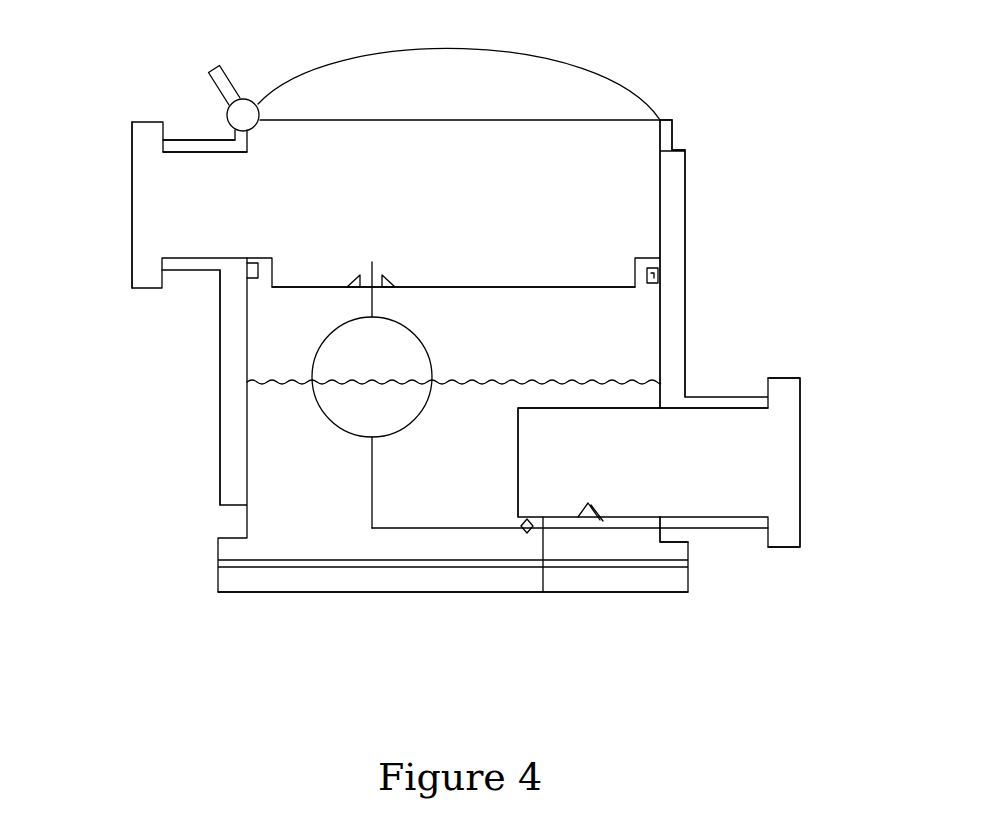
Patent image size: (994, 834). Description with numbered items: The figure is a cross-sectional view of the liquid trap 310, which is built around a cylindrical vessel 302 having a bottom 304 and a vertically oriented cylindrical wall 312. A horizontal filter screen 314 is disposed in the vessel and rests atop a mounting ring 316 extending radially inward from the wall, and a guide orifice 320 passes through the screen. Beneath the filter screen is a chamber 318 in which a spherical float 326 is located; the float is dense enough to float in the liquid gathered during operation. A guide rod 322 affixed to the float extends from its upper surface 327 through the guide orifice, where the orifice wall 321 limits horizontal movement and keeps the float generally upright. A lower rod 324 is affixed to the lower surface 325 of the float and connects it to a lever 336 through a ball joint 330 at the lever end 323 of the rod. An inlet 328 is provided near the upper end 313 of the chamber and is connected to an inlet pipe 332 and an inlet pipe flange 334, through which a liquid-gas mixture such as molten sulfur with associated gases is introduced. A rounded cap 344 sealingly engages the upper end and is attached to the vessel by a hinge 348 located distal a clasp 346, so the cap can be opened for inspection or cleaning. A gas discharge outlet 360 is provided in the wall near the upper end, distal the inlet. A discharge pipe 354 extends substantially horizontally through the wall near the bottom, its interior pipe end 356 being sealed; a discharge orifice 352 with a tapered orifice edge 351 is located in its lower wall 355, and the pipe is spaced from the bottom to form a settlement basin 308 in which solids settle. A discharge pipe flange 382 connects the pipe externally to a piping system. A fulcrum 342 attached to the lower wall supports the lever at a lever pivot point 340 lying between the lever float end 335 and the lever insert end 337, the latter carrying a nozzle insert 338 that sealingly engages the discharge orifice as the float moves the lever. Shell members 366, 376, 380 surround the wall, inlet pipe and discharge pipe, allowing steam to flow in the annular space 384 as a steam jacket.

The cylindrical vessel 302 is at (714, 214).
The bottom 304 is at (218, 582).
The settlement basin 308 is at (672, 562).
The liquid trap 310 is at (123, 92).
The cylindrical wall 312 is at (660, 327).
The upper end 313 is at (252, 140).
The filter screen 314 is at (453, 287).
The mounting ring 316 is at (662, 283).
The chamber 318 is at (486, 335).
The guide orifice 320 is at (377, 293).
The orifice wall 321 is at (390, 280).
The guide rod 322 is at (358, 280).
The lever end 323 is at (374, 510).
The lower rod 324 is at (368, 480).
The lower surface 325 is at (382, 443).
The float 326 is at (313, 358).
The upper surface 327 is at (353, 320).
The inlet 328 is at (226, 215).
The ball joint 330 is at (368, 527).
The inlet pipe 332 is at (205, 155).
The inlet pipe flange 334 is at (130, 138).
The lever float end 335 is at (400, 528).
The lever 336 is at (507, 522).
The lever insert end 337 is at (580, 517).
The nozzle insert 338 is at (590, 522).
The lever pivot point 340 is at (523, 532).
The fulcrum 342 is at (518, 518).
The rounded cap 344 is at (552, 53).
The clasp 346 is at (250, 100).
The hinge 348 is at (663, 112).
The orifice edge 351 is at (587, 508).
The discharge orifice 352 is at (600, 520).
The discharge pipe 354 is at (583, 408).
The lower wall 355 is at (545, 560).
The pipe end 356 is at (518, 448).
The gas discharge outlet 360 is at (675, 140).
The shell member 366 is at (218, 363).
The shell member 376 is at (195, 138).
The shell member 380 is at (712, 397).
The discharge pipe flange 382 is at (785, 548).
The annular space 384 is at (230, 432).